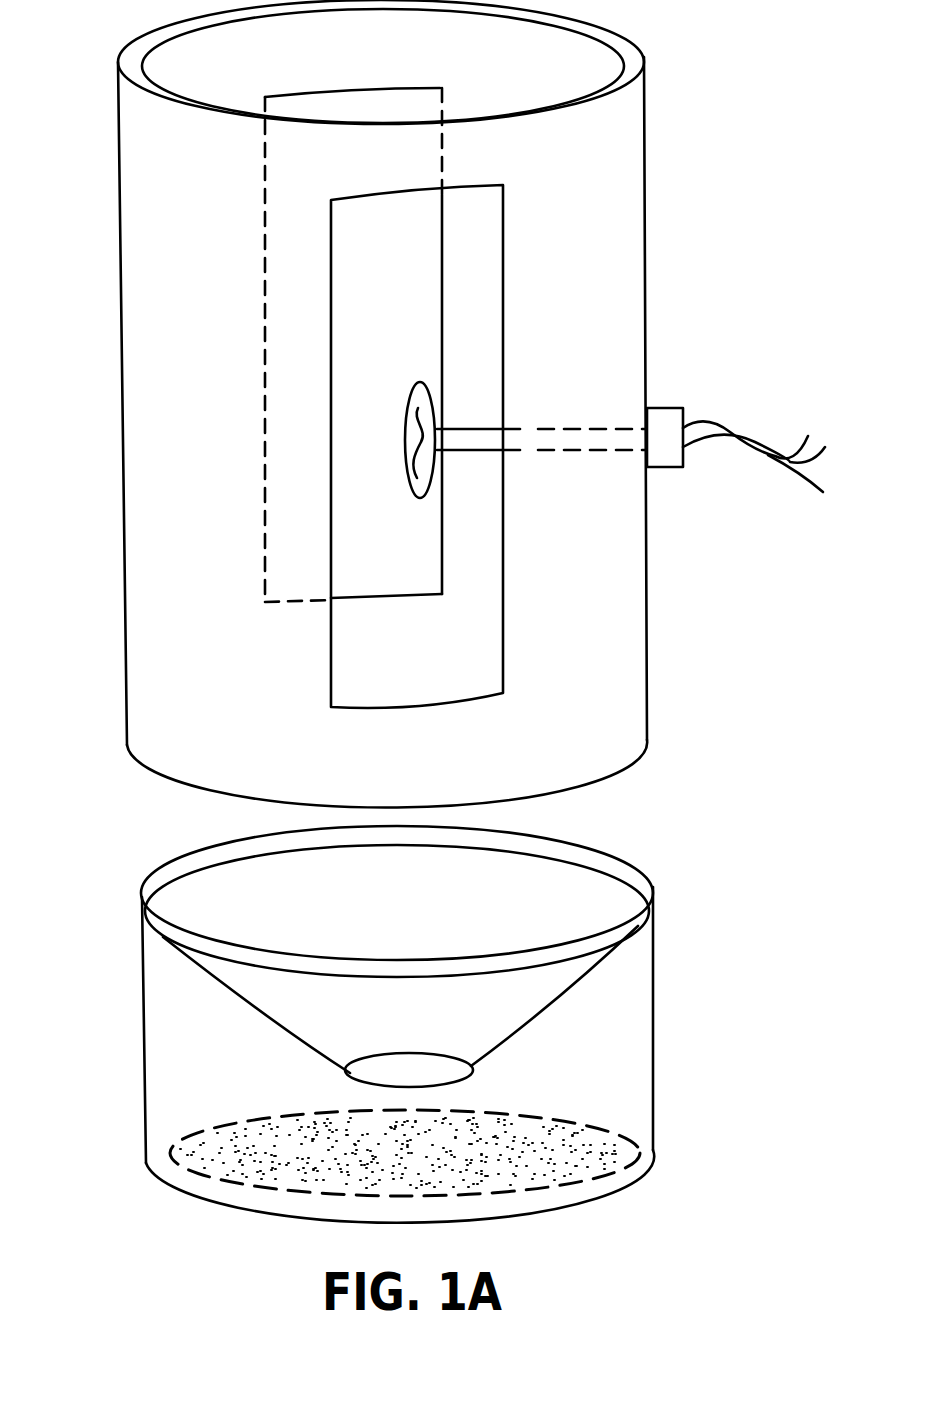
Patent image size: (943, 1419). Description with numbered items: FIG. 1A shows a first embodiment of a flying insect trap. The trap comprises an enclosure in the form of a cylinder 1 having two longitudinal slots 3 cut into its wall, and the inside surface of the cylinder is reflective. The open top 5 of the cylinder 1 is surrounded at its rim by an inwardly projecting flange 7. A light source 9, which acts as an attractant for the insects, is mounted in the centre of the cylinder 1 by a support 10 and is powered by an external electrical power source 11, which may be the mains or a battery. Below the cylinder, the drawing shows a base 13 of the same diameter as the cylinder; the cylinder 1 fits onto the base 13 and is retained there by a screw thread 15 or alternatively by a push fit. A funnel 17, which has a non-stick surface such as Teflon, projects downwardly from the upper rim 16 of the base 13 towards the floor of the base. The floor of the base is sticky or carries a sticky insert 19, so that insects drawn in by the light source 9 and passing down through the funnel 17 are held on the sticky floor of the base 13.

The cylinder 1 is at (627, 267).
The longitudinal slots 3 is at (345, 329).
The open top 5 is at (200, 58).
The inwardly projecting flange 7 is at (640, 58).
The light source 9 is at (421, 400).
The support 10 is at (478, 446).
The external electrical power source 11 is at (758, 463).
The base 13 is at (643, 1037).
The screw thread 15 is at (580, 855).
The upper rim 16 is at (167, 928).
The funnel 17 is at (277, 1010).
The sticky insert 19 is at (580, 1157).